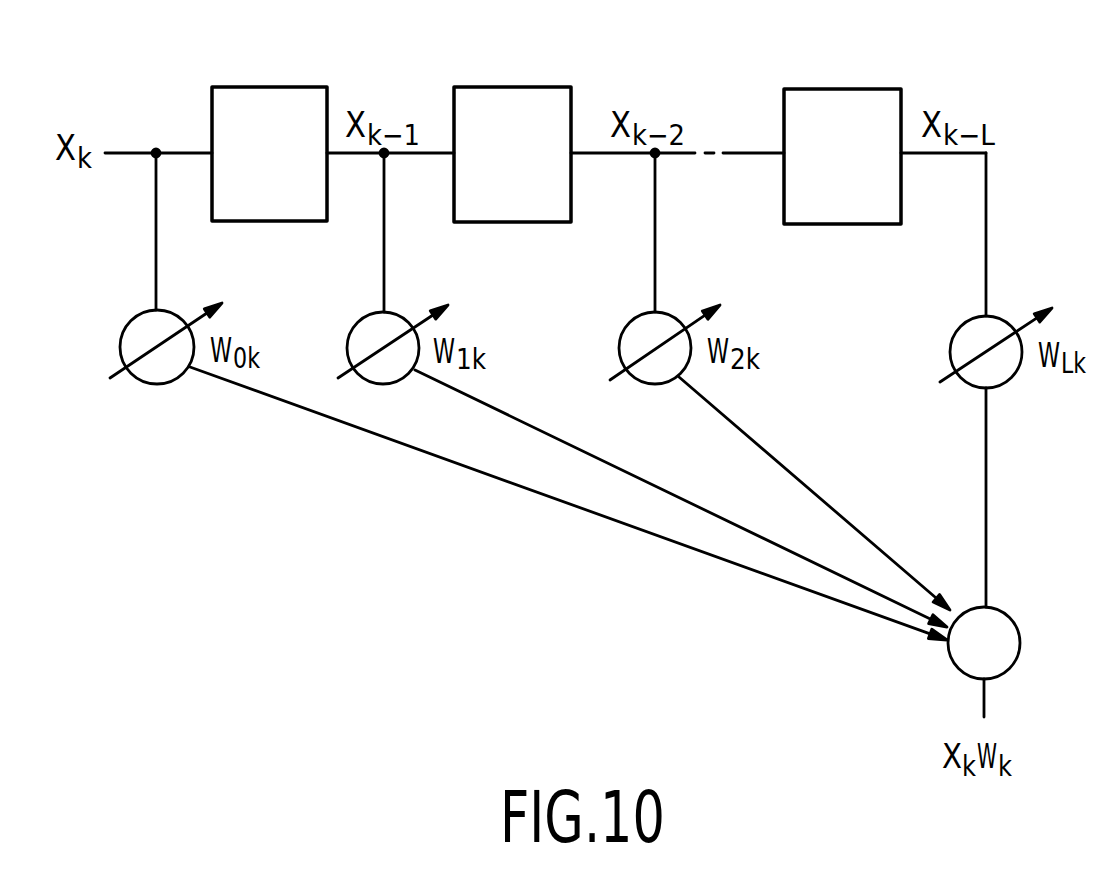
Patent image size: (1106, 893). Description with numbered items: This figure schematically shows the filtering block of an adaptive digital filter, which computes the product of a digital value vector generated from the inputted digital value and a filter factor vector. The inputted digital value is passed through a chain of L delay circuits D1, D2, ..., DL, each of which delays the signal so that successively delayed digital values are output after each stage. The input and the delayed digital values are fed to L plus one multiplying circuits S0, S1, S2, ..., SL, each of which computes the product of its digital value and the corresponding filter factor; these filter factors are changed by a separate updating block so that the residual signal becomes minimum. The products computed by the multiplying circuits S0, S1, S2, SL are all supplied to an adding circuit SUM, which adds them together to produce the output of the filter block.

The delay circuit D1 is at (270, 87).
The delay circuit D2 is at (515, 87).
The delay circuit DL is at (845, 89).
The multiplying circuit S0 is at (157, 385).
The multiplying circuit S1 is at (385, 385).
The multiplying circuit S2 is at (658, 385).
The multiplying circuit SL is at (1003, 387).
The adding circuit SUM is at (1020, 645).